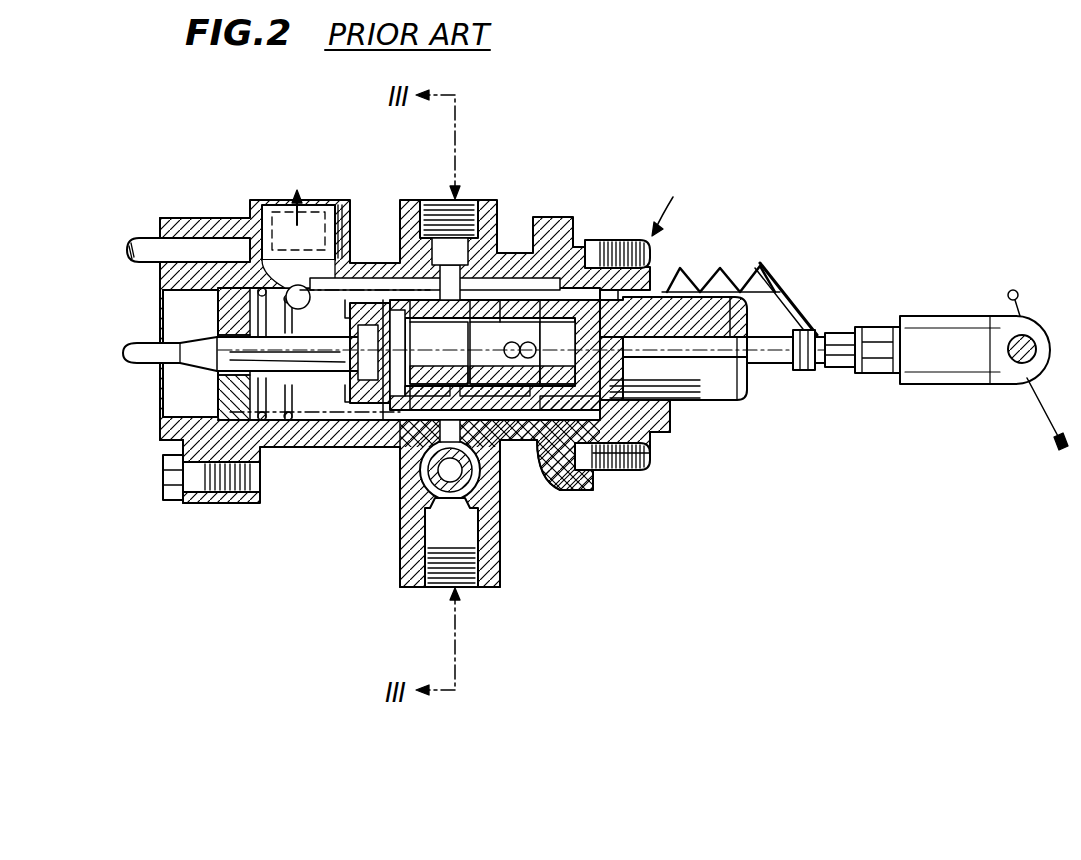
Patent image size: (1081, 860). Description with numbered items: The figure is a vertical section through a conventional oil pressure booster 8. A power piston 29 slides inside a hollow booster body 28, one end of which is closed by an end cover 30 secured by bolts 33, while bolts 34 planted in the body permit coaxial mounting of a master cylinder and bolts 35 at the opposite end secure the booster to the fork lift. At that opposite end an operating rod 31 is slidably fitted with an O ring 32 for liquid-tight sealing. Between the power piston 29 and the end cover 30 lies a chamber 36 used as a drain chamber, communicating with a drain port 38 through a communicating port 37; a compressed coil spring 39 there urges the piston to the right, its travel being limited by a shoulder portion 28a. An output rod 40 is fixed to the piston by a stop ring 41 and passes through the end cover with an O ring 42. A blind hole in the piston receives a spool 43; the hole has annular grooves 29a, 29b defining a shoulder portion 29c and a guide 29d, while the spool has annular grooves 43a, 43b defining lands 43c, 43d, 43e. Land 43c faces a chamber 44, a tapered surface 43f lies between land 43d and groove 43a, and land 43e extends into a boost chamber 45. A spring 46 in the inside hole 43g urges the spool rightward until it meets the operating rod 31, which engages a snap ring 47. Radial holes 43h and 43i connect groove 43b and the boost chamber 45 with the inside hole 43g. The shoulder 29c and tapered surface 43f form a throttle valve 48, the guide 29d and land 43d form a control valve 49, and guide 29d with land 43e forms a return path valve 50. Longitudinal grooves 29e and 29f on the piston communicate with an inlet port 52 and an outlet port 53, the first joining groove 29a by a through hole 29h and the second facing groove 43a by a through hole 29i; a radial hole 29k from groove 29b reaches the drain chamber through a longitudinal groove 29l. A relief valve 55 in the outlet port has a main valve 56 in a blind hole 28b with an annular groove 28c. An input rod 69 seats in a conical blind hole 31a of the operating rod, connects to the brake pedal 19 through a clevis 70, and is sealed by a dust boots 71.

The oil pressure booster 8 is at (706, 200).
The brake pedal 19 is at (1058, 450).
The booster body 28 is at (300, 455).
The shoulder portion 28a is at (600, 455).
The blind hole 28b is at (505, 500).
The annular groove 28c is at (420, 430).
The power piston 29 is at (360, 395).
The annular groove 29a is at (512, 320).
The annular groove 29b is at (555, 325).
The shoulder portion 29c is at (490, 320).
The guide 29d is at (522, 335).
The longitudinal groove 29e is at (405, 320).
The longitudinal groove 29f is at (405, 400).
The through hole 29h is at (455, 300).
The through hole 29i is at (415, 410).
The radial hole 29k is at (640, 300).
The longitudinal groove 29l is at (245, 305).
The end cover 30 is at (160, 430).
The operating rod 31 is at (740, 400).
The conical blind hole 31a is at (747, 410).
The O ring 32 is at (640, 415).
The bolts 33 is at (162, 478).
The bolts 34 is at (134, 238).
The bolts 35 is at (603, 440).
The chamber 36 is at (357, 380).
The communicating port 37 is at (275, 252).
The drain port 38 is at (316, 230).
The compressed coil spring 39 is at (290, 400).
The output rod 40 is at (135, 366).
The stop ring 41 is at (337, 400).
The O ring 42 is at (222, 390).
The spool 43 is at (597, 262).
The annular groove 43a is at (465, 238).
The annular groove 43b is at (545, 310).
The land 43c is at (383, 300).
The land 43d is at (500, 310).
The land 43e is at (575, 320).
The tapered surface 43f is at (505, 420).
The inside hole 43g is at (385, 420).
The radial hole 43h is at (590, 455).
The radial hole 43i is at (650, 395).
The chamber 44 is at (375, 410).
The boost chamber 45 is at (577, 470).
The spring 46 is at (247, 352).
The snap ring 47 is at (660, 400).
The throttle valve 48 is at (510, 430).
The passage 49 is at (560, 440).
The return path valve 50 is at (545, 420).
The inlet port 52 is at (463, 240).
The outlet port 53 is at (412, 586).
The relief valve 55 is at (490, 480).
The main valve 56 is at (500, 585).
The input rod 69 is at (777, 364).
The clevis 70 is at (953, 384).
The dust boots 71 is at (773, 287).